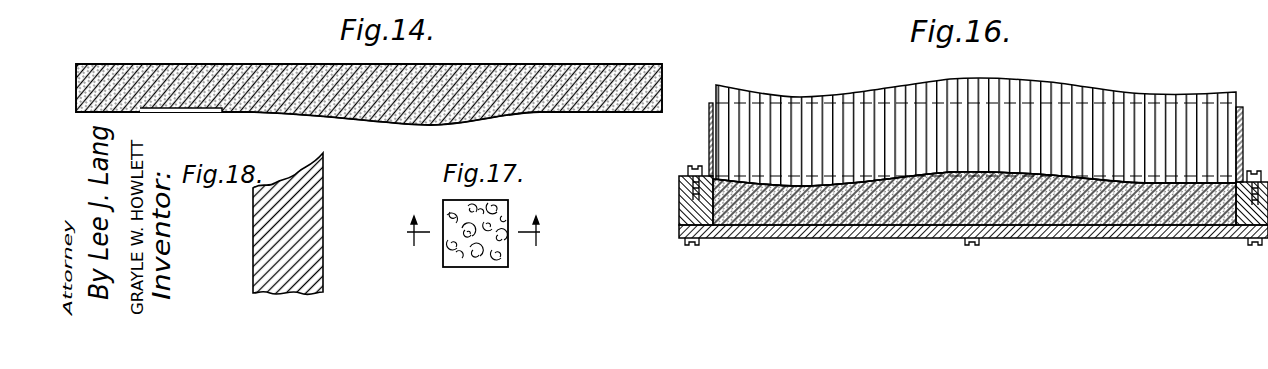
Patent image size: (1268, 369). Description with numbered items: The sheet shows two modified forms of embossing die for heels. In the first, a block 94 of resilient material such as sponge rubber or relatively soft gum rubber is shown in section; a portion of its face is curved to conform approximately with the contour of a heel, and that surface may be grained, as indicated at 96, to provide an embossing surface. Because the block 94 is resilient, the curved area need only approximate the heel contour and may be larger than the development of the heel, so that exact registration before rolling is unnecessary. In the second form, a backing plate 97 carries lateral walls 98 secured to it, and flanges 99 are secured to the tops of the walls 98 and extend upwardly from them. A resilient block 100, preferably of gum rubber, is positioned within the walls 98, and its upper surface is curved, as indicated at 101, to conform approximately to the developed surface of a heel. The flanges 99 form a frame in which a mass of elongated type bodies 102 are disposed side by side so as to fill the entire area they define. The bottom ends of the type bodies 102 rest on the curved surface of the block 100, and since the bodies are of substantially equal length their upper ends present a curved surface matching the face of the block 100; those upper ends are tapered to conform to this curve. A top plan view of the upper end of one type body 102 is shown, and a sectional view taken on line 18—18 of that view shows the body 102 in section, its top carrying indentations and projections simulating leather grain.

In FIG. 14, the block of resilient material 94 is at (543, 64).
In FIG. 14, the grained surface 96 is at (222, 112).
In FIG. 16, the backing plate 97 is at (1032, 236).
In FIG. 16, the lateral walls 98 is at (688, 192).
In FIG. 16, the flanges 99 is at (1243, 110).
In FIG. 16, the resilient block 100 is at (1078, 214).
In FIG. 16, the curved upper surface 101 is at (1100, 180).
In FIG. 18, the type bodies 102 is at (263, 240).
In FIG. 17, the type bodies 102 is at (477, 268).
In FIG. 16, the type bodies 102 is at (1083, 92).
In FIG. 17, the section line 18 is at (477, 236).